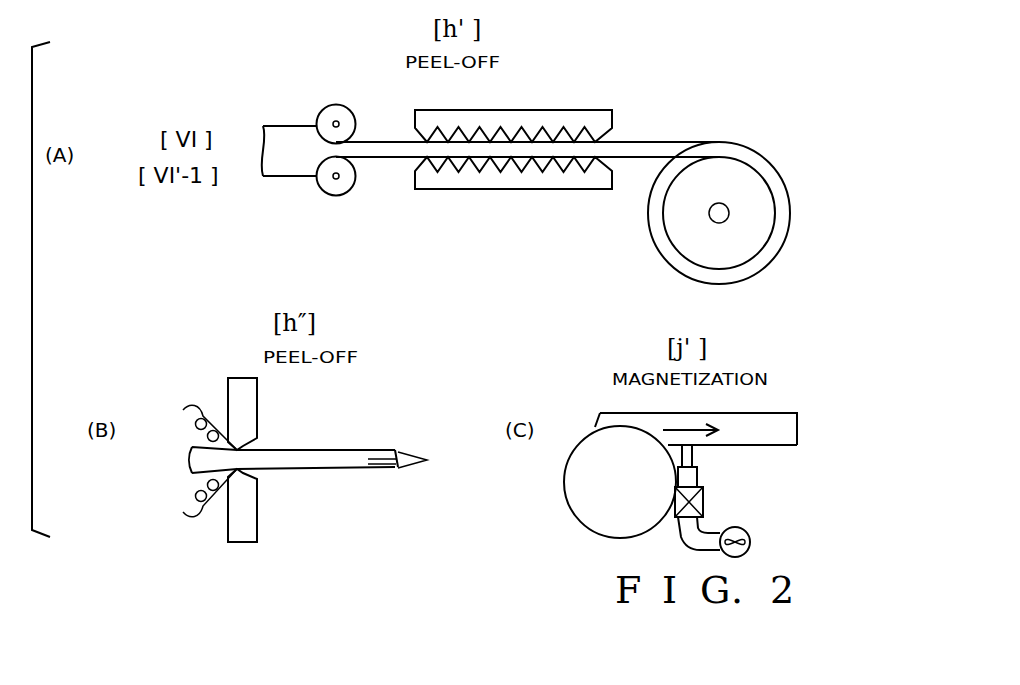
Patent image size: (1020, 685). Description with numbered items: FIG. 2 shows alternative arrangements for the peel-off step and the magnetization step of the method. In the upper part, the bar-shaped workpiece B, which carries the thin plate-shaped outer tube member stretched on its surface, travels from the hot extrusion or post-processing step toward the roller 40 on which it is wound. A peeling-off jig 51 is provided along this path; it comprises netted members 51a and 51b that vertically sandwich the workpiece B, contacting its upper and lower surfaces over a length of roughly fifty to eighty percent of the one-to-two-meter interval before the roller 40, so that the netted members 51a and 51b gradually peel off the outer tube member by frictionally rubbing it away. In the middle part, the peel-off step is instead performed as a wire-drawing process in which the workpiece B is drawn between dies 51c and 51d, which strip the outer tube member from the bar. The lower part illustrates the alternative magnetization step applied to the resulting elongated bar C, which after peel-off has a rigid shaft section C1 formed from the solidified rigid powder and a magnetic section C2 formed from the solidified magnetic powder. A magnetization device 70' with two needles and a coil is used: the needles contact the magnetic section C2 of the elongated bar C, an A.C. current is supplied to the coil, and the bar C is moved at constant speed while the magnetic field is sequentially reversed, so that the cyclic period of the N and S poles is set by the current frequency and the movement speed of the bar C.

The peeling-off jig 51 is at (513, 170).
The netted member 51a is at (527, 118).
The netted member 51b is at (482, 218).
The roller 40 is at (750, 211).
The bar-shaped workpiece B is at (638, 141).
The die 51c is at (252, 410).
The die 51d is at (252, 507).
The elongated bar C is at (724, 429).
The rigid shaft section C1 is at (788, 431).
The magnetic section C2 is at (727, 447).
The magnetization device 70' is at (729, 501).